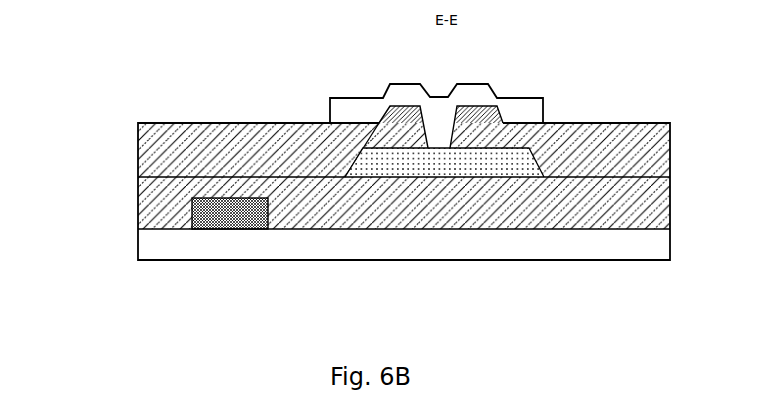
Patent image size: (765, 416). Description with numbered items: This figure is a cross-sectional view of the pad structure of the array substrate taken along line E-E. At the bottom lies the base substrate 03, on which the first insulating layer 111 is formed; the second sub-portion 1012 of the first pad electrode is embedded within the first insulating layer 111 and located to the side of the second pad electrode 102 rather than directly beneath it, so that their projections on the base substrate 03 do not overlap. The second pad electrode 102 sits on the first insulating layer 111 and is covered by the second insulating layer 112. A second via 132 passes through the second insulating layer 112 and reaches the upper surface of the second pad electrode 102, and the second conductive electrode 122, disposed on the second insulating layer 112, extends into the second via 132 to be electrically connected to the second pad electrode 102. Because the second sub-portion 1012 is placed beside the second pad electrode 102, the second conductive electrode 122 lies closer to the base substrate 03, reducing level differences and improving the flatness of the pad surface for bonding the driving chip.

The base substrate 03 is at (152, 247).
The first insulating layer 111 is at (150, 213).
The second sub-portion 1012 is at (227, 224).
The second insulating layer 112 is at (140, 145).
The second pad electrode 102 is at (558, 143).
The second via 132 is at (468, 122).
The second conductive electrode 122 is at (458, 92).